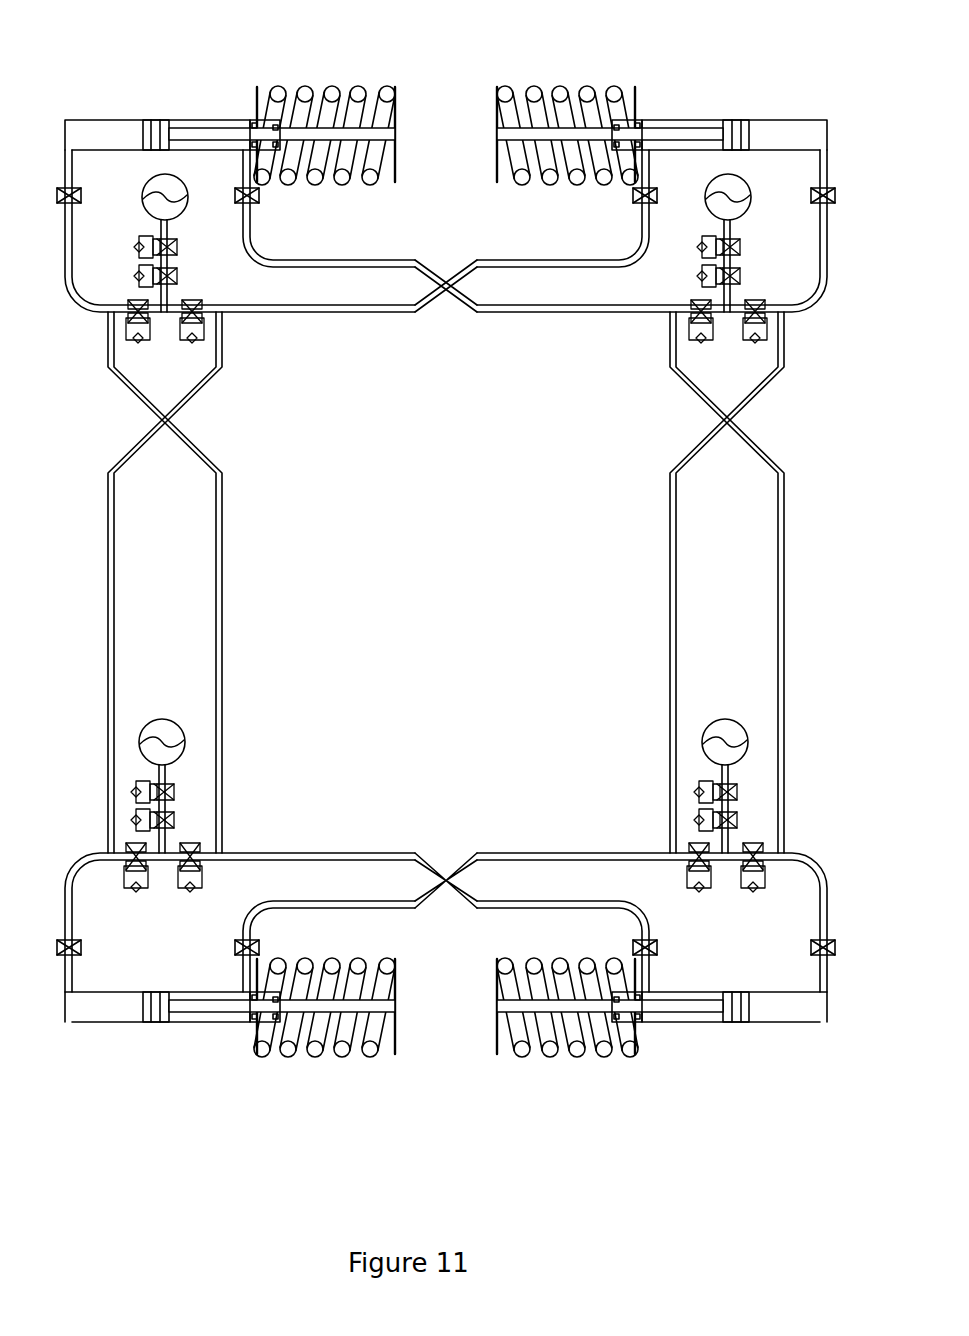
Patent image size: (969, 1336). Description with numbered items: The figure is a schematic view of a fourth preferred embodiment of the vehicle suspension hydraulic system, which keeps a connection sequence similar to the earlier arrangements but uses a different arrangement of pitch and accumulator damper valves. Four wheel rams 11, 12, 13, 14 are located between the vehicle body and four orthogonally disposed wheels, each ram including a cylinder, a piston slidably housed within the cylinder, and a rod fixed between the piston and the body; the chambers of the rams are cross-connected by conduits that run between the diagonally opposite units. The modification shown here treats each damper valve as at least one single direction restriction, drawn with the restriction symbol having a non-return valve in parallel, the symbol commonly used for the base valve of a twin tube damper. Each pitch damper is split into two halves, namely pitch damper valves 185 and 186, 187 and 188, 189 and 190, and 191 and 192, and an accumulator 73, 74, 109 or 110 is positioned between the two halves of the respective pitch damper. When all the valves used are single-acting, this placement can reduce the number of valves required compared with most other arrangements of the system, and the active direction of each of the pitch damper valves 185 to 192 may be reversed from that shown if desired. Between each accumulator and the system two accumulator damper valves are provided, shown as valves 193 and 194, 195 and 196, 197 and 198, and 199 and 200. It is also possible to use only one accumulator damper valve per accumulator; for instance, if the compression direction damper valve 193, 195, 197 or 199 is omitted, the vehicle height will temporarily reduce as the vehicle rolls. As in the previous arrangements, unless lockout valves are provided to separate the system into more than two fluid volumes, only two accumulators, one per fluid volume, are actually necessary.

The wheel ram 11 is at (236, 174).
The wheel ram 12 is at (656, 174).
The wheel ram 13 is at (656, 918).
The wheel ram 14 is at (236, 918).
The accumulator 73 is at (187, 183).
The accumulator 74 is at (712, 236).
The third accumulator 109 is at (162, 718).
The fourth accumulator 110 is at (725, 764).
The pitch damper valve 185 is at (128, 302).
The pitch damper valve 186 is at (202, 302).
The pitch damper valve 187 is at (780, 312).
The pitch damper valve 188 is at (675, 311).
The pitch damper valve 189 is at (735, 885).
The pitch damper valve 190 is at (681, 885).
The pitch damper valve 191 is at (125, 872).
The pitch damper valve 192 is at (178, 872).
The accumulator damper valve 193 is at (178, 248).
The accumulator damper valve 194 is at (178, 275).
The accumulator damper valve 195 is at (751, 240).
The accumulator damper valve 196 is at (751, 268).
The accumulator damper valve 197 is at (736, 784).
The accumulator damper valve 198 is at (737, 813).
The accumulator damper valve 199 is at (172, 788).
The accumulator damper valve 200 is at (172, 818).